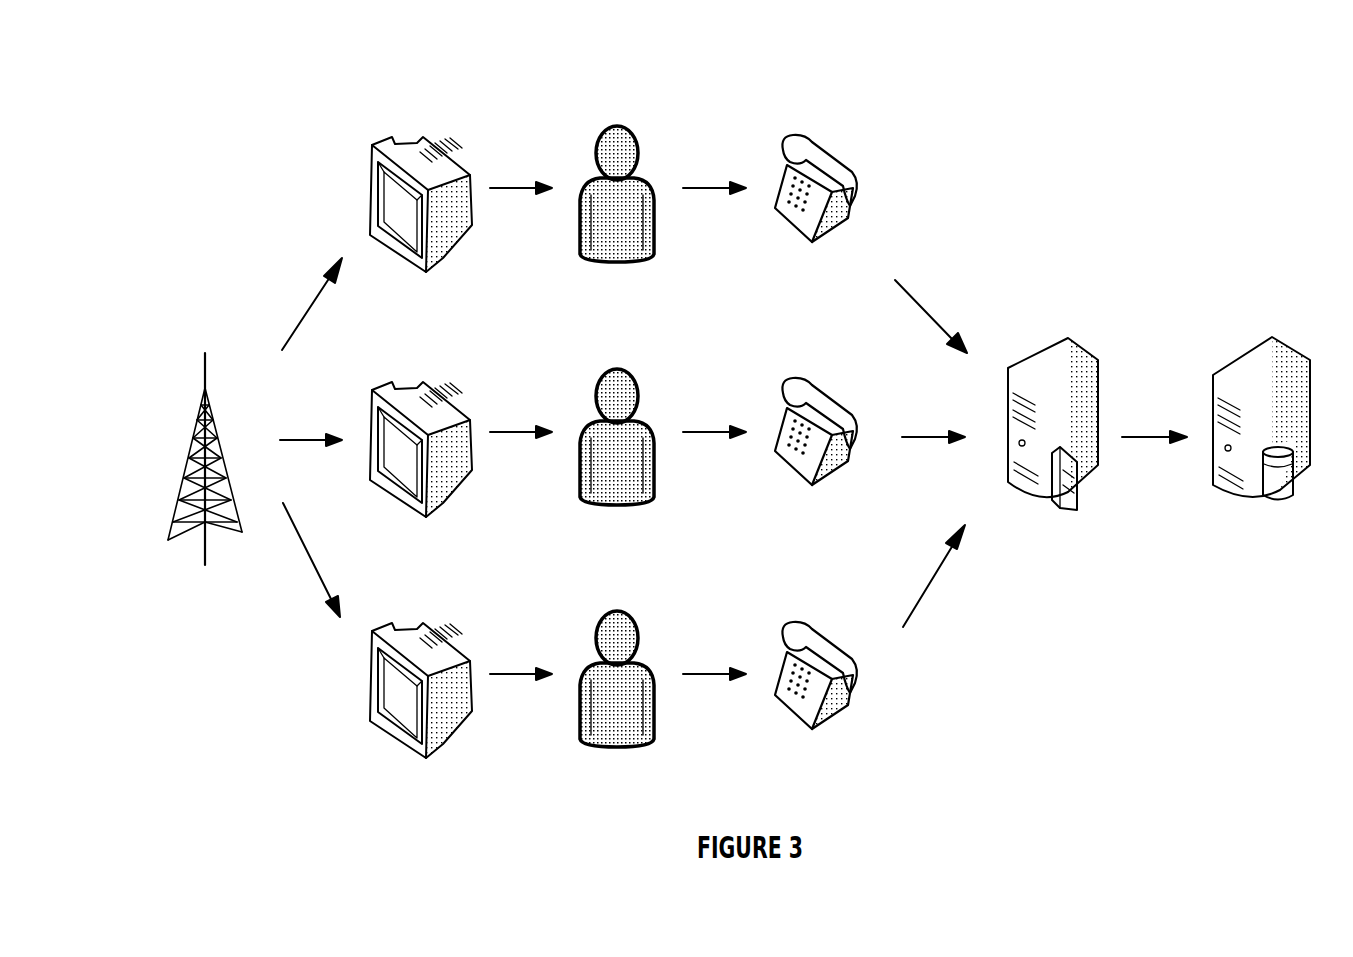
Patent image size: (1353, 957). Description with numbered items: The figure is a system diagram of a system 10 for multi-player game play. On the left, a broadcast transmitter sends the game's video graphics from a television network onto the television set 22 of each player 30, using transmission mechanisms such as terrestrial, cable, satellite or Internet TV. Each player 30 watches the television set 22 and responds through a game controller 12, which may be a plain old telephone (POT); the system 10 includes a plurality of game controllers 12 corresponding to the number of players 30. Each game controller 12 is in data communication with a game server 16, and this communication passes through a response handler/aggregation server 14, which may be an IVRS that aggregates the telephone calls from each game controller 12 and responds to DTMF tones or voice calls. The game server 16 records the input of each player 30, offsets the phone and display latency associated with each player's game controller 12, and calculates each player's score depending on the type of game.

The system 10 is at (1080, 193).
The television set 22 is at (372, 168).
The player 30 is at (615, 125).
The game controller 12 is at (838, 150).
The response handler/aggregation server 14 is at (1047, 350).
The game server 16 is at (1245, 350).